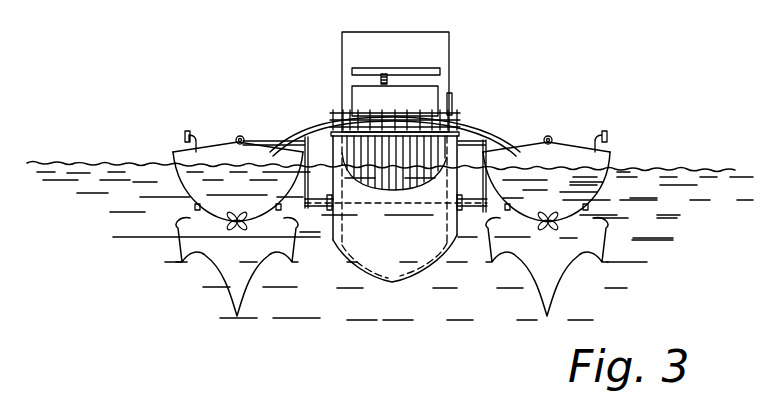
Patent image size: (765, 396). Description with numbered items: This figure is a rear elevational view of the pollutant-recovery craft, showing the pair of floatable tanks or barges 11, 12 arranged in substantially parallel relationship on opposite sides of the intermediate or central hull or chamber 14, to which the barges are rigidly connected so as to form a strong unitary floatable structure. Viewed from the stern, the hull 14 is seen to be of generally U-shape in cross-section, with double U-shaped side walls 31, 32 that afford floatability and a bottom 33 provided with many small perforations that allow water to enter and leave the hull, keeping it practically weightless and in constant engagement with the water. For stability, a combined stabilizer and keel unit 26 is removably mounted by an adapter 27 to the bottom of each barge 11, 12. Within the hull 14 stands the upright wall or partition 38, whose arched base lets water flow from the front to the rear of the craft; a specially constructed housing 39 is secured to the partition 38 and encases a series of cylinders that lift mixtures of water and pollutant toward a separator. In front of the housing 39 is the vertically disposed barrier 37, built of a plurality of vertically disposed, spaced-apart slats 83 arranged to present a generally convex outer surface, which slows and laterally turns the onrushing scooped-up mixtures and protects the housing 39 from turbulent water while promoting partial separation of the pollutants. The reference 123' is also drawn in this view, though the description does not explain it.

The floatable tank or barge 11 is at (611, 163).
The floatable tank or barge 12 is at (173, 156).
The intermediate hull or chamber 14 is at (462, 115).
The combined stabilizer and keel unit 26 is at (204, 257).
The adapter 27 is at (198, 210).
The double U-shaped side wall 31 is at (333, 242).
The double U-shaped side wall 32 is at (460, 247).
The hull bottom 33 is at (385, 281).
The barrier 37 is at (423, 111).
The upright wall or partition 38 is at (422, 72).
The housing 39 is at (438, 53).
The slats 83 is at (397, 111).
The central hull top plate 123' is at (378, 120).